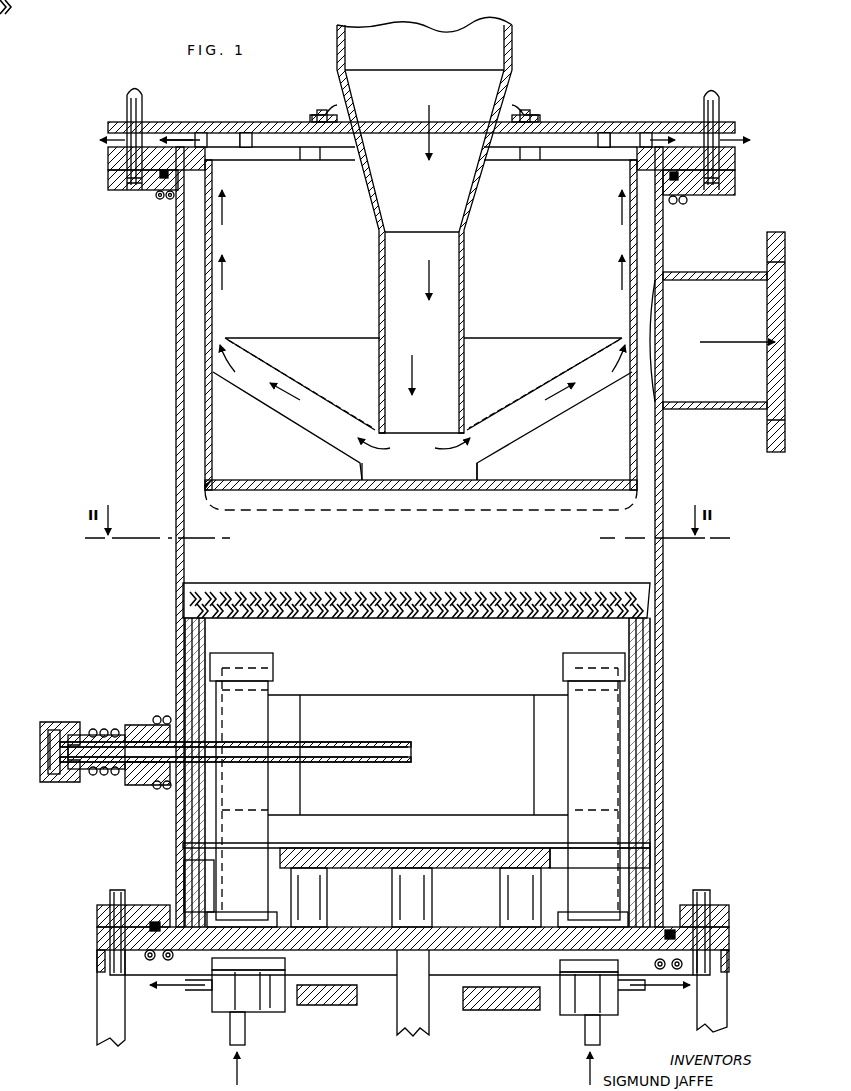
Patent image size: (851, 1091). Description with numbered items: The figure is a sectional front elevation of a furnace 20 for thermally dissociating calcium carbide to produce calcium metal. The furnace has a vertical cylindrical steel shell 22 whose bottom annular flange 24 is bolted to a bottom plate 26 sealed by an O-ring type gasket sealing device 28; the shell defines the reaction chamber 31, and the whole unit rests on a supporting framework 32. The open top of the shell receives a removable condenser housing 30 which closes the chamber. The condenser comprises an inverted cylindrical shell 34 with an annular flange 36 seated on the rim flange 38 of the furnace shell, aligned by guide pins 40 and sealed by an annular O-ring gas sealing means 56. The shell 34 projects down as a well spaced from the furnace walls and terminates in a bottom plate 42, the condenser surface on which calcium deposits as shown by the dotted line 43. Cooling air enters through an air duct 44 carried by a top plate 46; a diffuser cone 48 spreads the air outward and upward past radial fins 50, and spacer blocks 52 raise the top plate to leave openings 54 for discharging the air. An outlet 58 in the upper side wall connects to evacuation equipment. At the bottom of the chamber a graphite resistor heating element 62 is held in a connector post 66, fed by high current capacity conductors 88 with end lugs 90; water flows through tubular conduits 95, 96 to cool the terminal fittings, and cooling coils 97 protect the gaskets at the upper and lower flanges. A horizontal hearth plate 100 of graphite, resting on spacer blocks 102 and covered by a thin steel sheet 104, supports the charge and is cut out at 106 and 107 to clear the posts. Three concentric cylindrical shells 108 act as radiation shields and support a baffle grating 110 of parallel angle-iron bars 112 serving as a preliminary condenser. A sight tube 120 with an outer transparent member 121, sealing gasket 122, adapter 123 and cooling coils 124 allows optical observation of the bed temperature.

The furnace 20 is at (150, 462).
The vertical cylindrical steel shell 22 is at (182, 395).
The annular flange 24 is at (98, 905).
The bottom plate 26 is at (97, 936).
The O-ring type gasket sealing device 28 is at (168, 915).
The removable condenser housing 30 is at (411, 225).
The reaction chamber 31 is at (402, 543).
The supporting framework 32 is at (97, 996).
The inverted cylindrical shell 34 is at (215, 258).
The annular flange 36 is at (106, 155).
The rim flange 38 is at (106, 186).
The guide pins 40 is at (125, 98).
The bottom plate 42 is at (282, 478).
The dotted line 43 is at (540, 512).
The air duct 44 is at (470, 200).
The top plate 46 is at (290, 118).
The diffuser cone 48 is at (285, 365).
The radial fins 50 is at (362, 475).
The spacer blocks 52 is at (108, 140).
The openings 54 is at (205, 135).
The annular O-ring type gas sealing means 56 is at (160, 180).
The outlet 58 is at (735, 275).
The resistor heating element 62 is at (447, 700).
The connector post 66 is at (262, 705).
The high current capacity conductors 88 is at (340, 1000).
The end lugs 90 is at (282, 1002).
The tubular conduit 95 is at (243, 1040).
The tubular conduit 96 is at (195, 990).
The cooling coils 97 is at (170, 200).
The horizontal hearth plate 100 is at (480, 855).
The spacer blocks 102 is at (326, 900).
The thin sheet of steel 104 is at (388, 845).
The cut-out 106 is at (200, 862).
The cut-out 107 is at (558, 852).
The concentric cylindrical shells 108 is at (198, 650).
The baffle grating 110 is at (325, 309).
The angle-iron bars 112 is at (362, 596).
The sight tube 120 is at (382, 745).
The outer transparent member 121 is at (42, 740).
The sealing gasket 122 is at (135, 783).
The adapter 123 is at (135, 785).
The cooling coils 124 is at (108, 728).